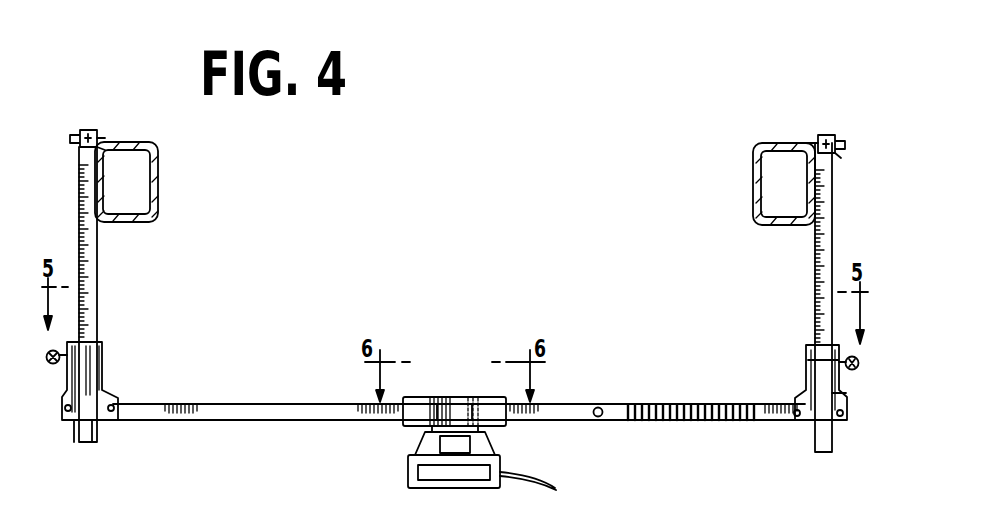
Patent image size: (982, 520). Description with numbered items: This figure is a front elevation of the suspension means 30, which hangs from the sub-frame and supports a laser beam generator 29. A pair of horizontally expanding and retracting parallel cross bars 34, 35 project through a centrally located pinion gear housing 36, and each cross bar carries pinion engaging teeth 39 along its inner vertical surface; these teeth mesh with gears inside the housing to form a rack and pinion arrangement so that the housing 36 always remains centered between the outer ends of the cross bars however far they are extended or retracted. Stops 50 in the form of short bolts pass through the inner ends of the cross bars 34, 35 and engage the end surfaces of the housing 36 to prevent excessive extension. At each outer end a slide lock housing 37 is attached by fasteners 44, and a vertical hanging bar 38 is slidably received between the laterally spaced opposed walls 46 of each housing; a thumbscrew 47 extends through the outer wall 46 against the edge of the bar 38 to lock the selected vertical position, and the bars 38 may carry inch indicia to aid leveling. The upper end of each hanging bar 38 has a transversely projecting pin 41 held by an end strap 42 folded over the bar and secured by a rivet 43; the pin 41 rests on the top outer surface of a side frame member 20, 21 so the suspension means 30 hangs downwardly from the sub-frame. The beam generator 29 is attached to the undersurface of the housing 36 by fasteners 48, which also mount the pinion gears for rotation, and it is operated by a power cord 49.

The side frame member 20 is at (755, 149).
The side frame member 21 is at (158, 151).
The beam generator 29 is at (495, 460).
The suspension means 30 is at (720, 280).
The cross bar 34 is at (220, 404).
The cross bar 35 is at (755, 404).
The pinion gear housing 36 is at (455, 397).
The slide lock housing 37 is at (104, 360).
The vertical hanging bar 38 is at (98, 290).
The pinion engaging teeth 39 is at (697, 420).
The pin 41 is at (82, 136).
The end strap 42 is at (92, 133).
The rivet 43 is at (80, 150).
The fasteners 44 is at (68, 412).
The walls 46 is at (808, 360).
The thumbscrew 47 is at (48, 363).
The fasteners 48 is at (437, 397).
The power cord 49 is at (545, 474).
The stops 50 is at (600, 406).